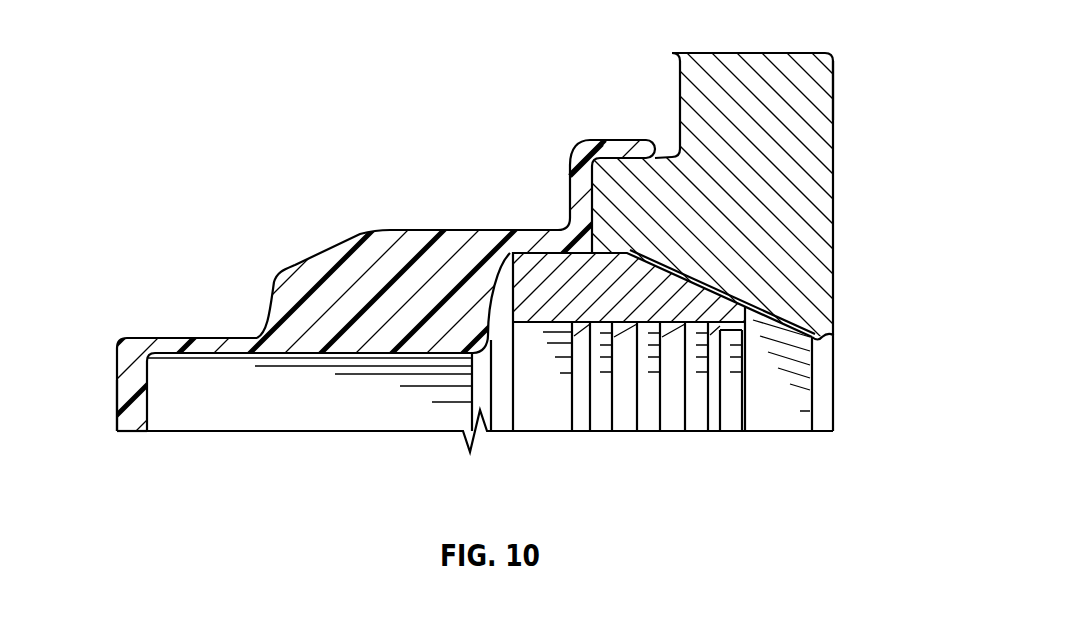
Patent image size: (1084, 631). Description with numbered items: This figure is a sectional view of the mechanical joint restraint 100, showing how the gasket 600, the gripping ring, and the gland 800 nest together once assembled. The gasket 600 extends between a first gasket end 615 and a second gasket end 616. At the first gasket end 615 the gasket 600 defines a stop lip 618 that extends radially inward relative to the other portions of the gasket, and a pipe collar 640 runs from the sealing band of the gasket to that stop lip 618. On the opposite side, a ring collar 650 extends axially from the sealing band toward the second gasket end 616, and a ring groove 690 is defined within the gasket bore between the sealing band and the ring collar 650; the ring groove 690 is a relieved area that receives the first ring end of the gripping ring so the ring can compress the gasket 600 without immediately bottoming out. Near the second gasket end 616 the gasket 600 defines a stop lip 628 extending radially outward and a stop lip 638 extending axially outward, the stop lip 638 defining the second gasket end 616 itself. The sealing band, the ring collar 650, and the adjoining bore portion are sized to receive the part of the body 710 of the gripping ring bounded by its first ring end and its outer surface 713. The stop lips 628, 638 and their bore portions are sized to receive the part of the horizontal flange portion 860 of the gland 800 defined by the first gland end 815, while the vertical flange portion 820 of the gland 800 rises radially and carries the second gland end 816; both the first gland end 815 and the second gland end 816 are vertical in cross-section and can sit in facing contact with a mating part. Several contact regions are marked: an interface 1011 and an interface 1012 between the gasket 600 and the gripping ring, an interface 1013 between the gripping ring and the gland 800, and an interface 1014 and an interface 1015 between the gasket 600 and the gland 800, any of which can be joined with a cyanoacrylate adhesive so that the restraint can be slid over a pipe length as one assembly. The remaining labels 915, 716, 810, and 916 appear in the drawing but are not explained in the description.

The mechanical joint restraint 100 is at (190, 109).
The gasket 600 is at (317, 253).
The pipe collar 640 is at (176, 344).
The first gasket end 615 is at (120, 306).
The outer surface of flange 915 is at (116, 363).
The stop lip 618 is at (123, 372).
The ring collar 650 is at (518, 240).
The interface 1014 is at (598, 188).
The first gland end 815 is at (575, 145).
The stop lip 638 is at (612, 140).
The stop lip 628 is at (572, 172).
The ring groove 690 is at (500, 262).
The body 710 is at (636, 262).
The horizontal flange portion 860 is at (625, 248).
The interface 1011 is at (520, 308).
The interface 1012 is at (568, 260).
The interface 1013 is at (704, 300).
The seal end portion 716 is at (744, 322).
The gland 800 is at (833, 143).
The vertical flange portion 820 is at (777, 80).
The second gasket end 616 is at (656, 150).
The interface 1015 is at (640, 165).
The second gland end 816 is at (833, 100).
The outer surface 713 is at (696, 283).
The housing body 810 is at (800, 280).
The housing foot 916 is at (833, 288).